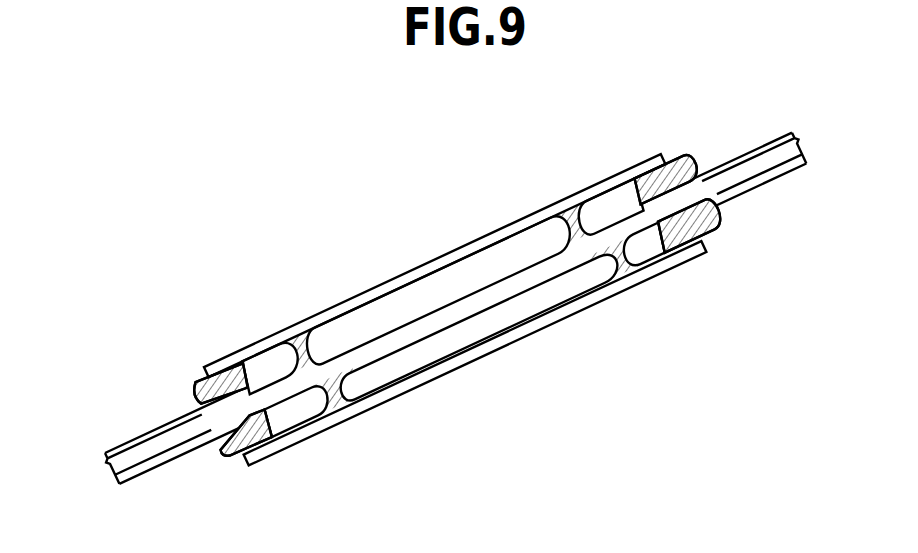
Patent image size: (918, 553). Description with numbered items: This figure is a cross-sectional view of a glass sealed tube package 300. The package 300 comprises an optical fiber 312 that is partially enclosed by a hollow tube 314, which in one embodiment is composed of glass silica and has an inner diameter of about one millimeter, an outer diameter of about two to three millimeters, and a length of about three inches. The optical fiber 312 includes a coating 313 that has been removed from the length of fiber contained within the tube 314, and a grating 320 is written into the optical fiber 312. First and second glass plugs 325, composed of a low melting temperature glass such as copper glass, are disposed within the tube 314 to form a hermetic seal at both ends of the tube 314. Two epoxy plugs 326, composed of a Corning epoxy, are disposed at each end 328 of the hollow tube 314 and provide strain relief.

The glass sealed tube package 300 is at (601, 82).
The optical fiber 312 is at (105, 468).
The coating 313 is at (155, 474).
The hollow tube 314 is at (468, 365).
The grating 320 is at (468, 303).
The glass plugs 325 is at (298, 333).
The epoxy plugs 326 is at (194, 378).
The end 328 is at (244, 467).